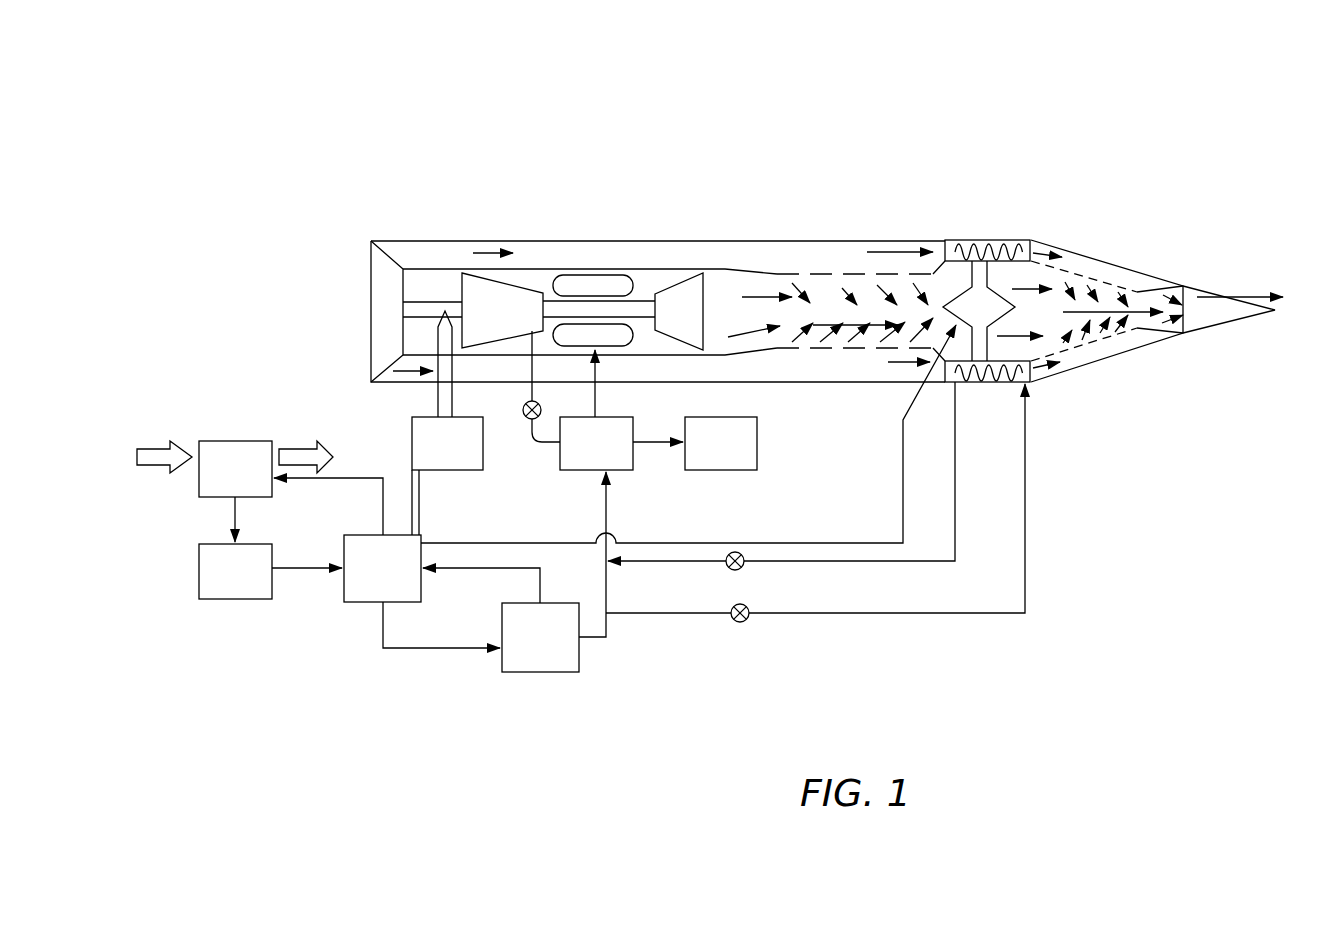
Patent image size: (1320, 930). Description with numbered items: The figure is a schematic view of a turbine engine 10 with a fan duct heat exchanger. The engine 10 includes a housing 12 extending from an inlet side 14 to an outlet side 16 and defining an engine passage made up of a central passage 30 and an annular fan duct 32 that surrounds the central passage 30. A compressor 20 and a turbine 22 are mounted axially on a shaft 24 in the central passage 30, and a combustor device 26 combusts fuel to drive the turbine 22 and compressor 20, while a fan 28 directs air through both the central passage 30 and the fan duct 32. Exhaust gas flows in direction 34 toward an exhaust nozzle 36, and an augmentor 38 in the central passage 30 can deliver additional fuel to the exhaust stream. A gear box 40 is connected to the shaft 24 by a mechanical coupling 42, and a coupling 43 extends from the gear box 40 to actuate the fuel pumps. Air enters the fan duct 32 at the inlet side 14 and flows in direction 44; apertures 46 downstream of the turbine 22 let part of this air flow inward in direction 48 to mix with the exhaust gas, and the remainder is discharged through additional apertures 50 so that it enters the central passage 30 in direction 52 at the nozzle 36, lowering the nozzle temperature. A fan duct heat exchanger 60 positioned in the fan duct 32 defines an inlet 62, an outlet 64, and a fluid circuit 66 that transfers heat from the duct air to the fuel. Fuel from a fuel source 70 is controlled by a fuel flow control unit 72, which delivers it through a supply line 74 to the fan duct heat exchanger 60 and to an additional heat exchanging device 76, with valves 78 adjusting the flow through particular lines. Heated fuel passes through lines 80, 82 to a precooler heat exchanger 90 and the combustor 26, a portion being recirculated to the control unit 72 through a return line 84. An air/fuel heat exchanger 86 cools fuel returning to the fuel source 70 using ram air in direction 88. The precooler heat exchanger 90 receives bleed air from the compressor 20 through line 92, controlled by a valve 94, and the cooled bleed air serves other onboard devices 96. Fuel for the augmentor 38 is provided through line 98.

The turbine engine 10 is at (910, 75).
The housing 12 is at (430, 240).
The inlet side 14 is at (350, 255).
The outlet side 16 is at (1204, 244).
The compressor 20 is at (515, 285).
The turbine 22 is at (685, 283).
The shaft 24 is at (415, 302).
The combustor device 26 is at (597, 275).
The fan 28 is at (385, 312).
The central passage 30 is at (722, 288).
The annular fan duct 32 is at (802, 262).
The exhaust gas flow direction 34 is at (858, 325).
The exhaust nozzle 36 is at (1200, 333).
The augmentor 38 is at (990, 288).
The gear box 40 is at (410, 442).
The mechanical coupling 42 is at (438, 398).
The coupling 43 is at (419, 503).
The fan duct air flow direction 44 is at (482, 255).
The apertures 46 is at (787, 270).
The inward air flow direction 48 is at (840, 288).
The additional apertures 50 is at (1090, 258).
The nozzle air entry direction 52 is at (1090, 292).
The fan duct heat exchanger 60 is at (970, 260).
The inlet 62 is at (1034, 388).
The outlet 64 is at (966, 390).
The fluid circuit 66 is at (987, 381).
The fuel source 70 is at (235, 599).
The fuel flow control unit 72 is at (360, 602).
The supply line 74 is at (865, 613).
The additional heat exchanging device 76 is at (533, 672).
The valves 78 is at (745, 567).
The line 80 is at (598, 640).
The line 82 is at (885, 561).
The return line 84 is at (462, 570).
The air/fuel heat exchanger 86 is at (232, 441).
The ram air flow direction 88 is at (140, 450).
The precooler heat exchanger 90 is at (573, 470).
The line 92 is at (535, 441).
The valve 94 is at (523, 411).
The onboard devices 96 is at (718, 470).
The line 98 is at (850, 543).